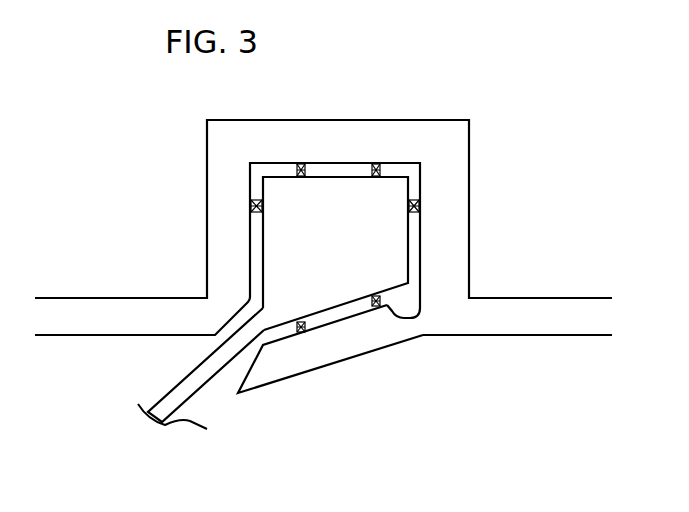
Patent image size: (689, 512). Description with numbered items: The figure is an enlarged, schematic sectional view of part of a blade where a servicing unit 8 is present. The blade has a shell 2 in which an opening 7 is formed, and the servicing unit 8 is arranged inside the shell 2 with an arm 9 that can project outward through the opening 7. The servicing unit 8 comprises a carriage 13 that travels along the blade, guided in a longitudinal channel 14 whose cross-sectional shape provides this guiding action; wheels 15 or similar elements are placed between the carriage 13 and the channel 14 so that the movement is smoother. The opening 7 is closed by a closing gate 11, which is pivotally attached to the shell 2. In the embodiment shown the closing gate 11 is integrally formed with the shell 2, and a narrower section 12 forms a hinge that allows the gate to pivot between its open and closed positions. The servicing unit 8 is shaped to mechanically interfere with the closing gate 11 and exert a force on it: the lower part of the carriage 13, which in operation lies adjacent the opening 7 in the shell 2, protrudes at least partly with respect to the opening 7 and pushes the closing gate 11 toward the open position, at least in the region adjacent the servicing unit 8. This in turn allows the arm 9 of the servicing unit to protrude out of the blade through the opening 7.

The shell 2 is at (542, 313).
The opening 7 is at (196, 353).
The servicing unit 8 is at (242, 229).
The arm 9 is at (200, 383).
The closing gate 11 is at (342, 350).
The narrower section 12 is at (420, 327).
The carriage 13 is at (369, 235).
The channel 14 is at (258, 177).
The wheels 15 is at (376, 166).